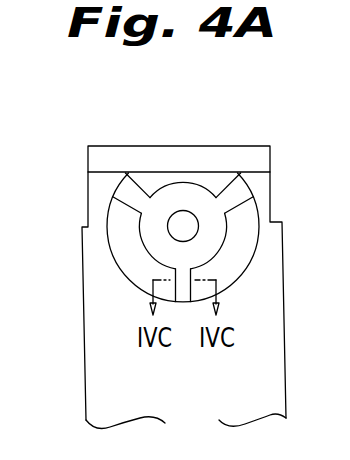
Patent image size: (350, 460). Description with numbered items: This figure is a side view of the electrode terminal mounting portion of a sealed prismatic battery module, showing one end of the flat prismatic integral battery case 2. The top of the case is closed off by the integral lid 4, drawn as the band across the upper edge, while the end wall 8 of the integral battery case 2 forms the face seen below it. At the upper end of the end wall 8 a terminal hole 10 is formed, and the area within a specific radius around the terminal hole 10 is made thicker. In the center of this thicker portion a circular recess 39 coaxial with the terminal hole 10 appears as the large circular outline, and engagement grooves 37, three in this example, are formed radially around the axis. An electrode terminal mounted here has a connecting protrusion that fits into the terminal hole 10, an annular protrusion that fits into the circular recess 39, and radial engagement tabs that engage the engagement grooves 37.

The integral battery case 2 is at (105, 373).
The integral lid 4 is at (105, 148).
The end wall 8 is at (212, 408).
The terminal hole 10 is at (184, 222).
The engagement grooves 37 is at (114, 203).
The circular recess 39 is at (160, 252).